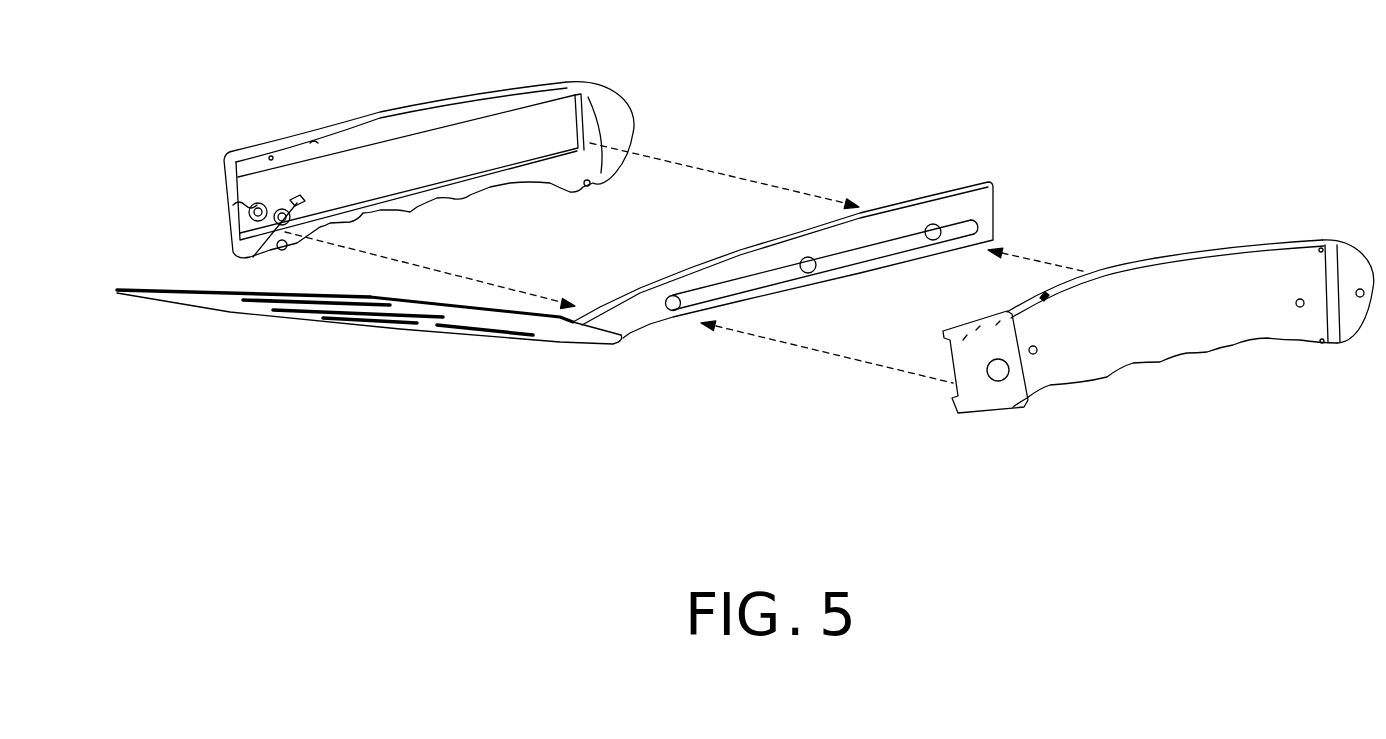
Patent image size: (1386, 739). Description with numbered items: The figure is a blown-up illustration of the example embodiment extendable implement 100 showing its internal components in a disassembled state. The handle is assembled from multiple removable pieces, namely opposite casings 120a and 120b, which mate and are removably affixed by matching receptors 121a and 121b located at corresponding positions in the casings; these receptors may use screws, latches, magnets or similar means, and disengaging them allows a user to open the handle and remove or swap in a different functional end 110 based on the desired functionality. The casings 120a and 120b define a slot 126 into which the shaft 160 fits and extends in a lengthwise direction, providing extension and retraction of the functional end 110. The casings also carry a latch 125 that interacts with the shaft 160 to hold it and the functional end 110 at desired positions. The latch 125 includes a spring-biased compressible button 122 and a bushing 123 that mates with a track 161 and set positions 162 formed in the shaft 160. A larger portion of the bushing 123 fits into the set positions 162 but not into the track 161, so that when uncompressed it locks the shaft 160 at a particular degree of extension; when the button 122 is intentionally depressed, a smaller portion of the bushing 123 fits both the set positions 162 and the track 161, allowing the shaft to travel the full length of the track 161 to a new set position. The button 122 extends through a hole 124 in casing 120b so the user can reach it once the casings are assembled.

The extendable implement 100 is at (247, 98).
The functional end 110 is at (228, 298).
The casing 120a is at (627, 112).
The casing 120b is at (1247, 322).
The receptor 121a is at (1320, 342).
The receptor 121b is at (587, 186).
The button 122 is at (243, 260).
The bushing 123 is at (232, 206).
The hole 124 is at (998, 381).
The latch 125 is at (170, 199).
The slot 126 is at (410, 168).
The shaft 160 is at (966, 205).
The track 161 is at (747, 283).
The set positions 162 is at (672, 311).